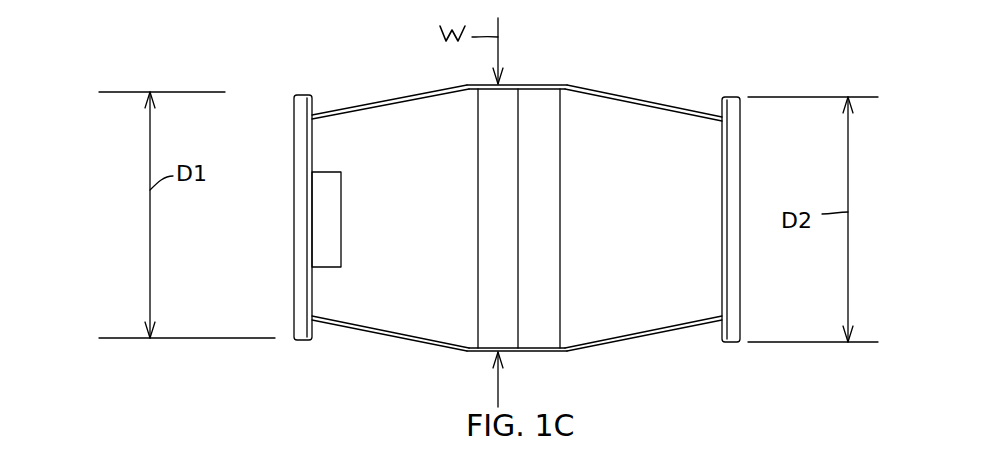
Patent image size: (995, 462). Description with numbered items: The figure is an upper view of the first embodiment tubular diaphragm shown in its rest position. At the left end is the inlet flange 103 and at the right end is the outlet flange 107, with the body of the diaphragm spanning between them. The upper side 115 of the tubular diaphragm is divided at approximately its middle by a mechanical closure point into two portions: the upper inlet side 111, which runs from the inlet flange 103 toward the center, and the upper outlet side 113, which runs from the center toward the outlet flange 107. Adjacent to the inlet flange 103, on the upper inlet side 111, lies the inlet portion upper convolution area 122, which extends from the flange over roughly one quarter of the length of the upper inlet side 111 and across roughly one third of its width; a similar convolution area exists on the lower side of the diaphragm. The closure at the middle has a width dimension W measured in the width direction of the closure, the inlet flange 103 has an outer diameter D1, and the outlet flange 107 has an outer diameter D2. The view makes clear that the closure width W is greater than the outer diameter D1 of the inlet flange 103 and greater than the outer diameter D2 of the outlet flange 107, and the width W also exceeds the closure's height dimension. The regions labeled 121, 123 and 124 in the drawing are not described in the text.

The inlet flange 103 is at (300, 117).
The outlet flange 107 is at (733, 140).
The upper inlet side 111 is at (388, 98).
The upper outlet side 113 is at (637, 102).
The upper side of the tubular diaphragm 115 is at (521, 210).
The first lower tapered wall 121 is at (380, 303).
The inlet portion upper convolution area 122 is at (322, 232).
The second lower tapered wall 123 is at (632, 313).
The central band section 124 is at (518, 84).